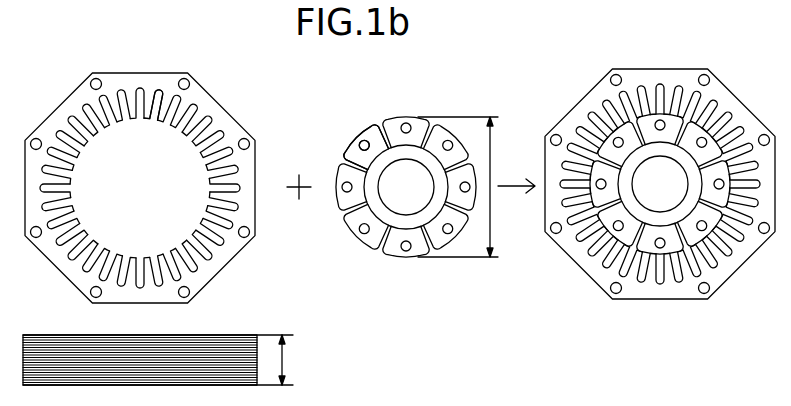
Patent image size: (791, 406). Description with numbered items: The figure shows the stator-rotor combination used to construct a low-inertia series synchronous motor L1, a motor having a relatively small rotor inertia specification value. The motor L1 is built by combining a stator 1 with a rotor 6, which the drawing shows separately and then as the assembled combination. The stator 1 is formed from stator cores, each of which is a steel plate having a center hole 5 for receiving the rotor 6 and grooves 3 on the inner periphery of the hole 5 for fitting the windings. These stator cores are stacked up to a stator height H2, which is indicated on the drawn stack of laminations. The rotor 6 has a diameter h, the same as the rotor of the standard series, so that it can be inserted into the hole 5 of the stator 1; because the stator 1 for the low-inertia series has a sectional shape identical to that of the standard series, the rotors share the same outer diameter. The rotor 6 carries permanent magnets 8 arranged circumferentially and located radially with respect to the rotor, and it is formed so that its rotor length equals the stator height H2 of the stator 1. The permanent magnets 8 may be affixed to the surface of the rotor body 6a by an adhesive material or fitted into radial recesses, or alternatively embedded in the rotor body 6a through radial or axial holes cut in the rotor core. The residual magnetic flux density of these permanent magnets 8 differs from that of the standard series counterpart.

The stator 1 is at (147, 162).
The grooves 3 is at (163, 102).
The center hole 5 is at (132, 155).
The rotor 6 is at (406, 177).
The rotor body 6a is at (385, 216).
The permanent magnets 8 is at (361, 131).
The low-inertia series synchronous motor L1 is at (664, 64).
The rotor diameter h is at (464, 187).
The stator height H2 is at (169, 360).